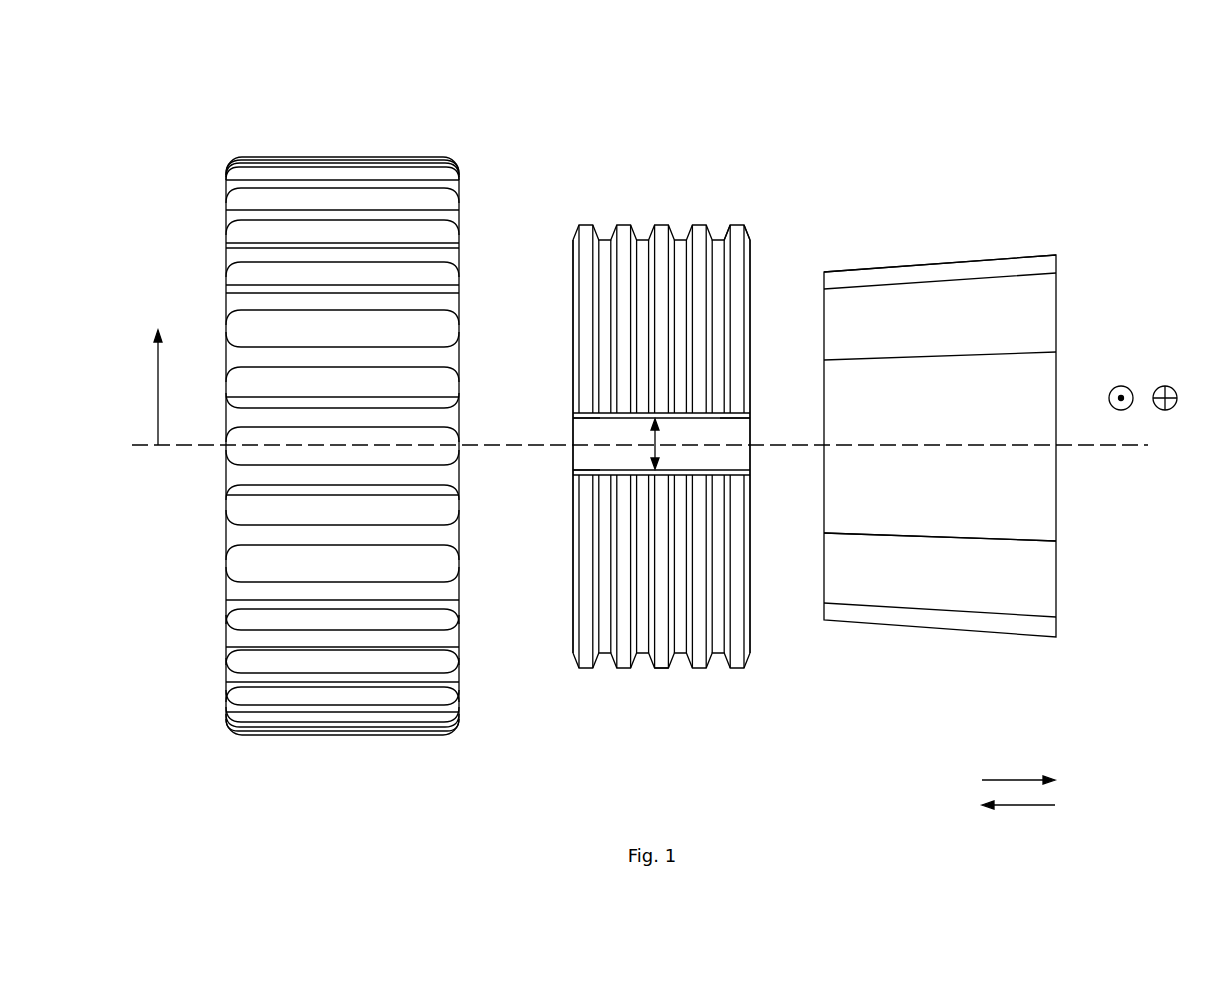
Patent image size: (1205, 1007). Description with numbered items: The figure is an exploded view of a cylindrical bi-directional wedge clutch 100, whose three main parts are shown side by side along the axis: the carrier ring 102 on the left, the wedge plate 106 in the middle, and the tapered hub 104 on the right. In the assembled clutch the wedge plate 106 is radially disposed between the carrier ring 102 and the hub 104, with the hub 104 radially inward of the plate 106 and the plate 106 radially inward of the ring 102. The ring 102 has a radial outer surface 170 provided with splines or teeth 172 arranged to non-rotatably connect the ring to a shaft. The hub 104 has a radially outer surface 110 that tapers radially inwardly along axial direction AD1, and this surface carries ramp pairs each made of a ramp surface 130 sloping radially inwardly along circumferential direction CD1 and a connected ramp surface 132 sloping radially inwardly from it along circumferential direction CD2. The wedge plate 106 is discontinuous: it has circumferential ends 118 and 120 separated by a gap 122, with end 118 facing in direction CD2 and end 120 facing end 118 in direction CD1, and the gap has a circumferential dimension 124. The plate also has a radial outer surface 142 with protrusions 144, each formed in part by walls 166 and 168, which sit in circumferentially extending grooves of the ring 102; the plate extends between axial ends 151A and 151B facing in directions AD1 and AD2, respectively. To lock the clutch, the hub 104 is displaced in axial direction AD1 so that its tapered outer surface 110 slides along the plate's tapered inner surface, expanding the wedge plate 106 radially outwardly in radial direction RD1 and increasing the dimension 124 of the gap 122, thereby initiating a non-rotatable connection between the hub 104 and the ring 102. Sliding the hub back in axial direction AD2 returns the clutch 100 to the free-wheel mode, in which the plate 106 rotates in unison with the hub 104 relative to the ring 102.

The cylindrical bi-directional wedge clutch 100 is at (994, 86).
The carrier ring 102 is at (320, 393).
The tapered hub 104 is at (975, 400).
The wedge plate 106 is at (661, 447).
The radially outer surface 110 is at (883, 252).
The circumferential end 118 is at (588, 421).
The circumferential end 120 is at (588, 468).
The gap 122 is at (737, 437).
The dimension 124 is at (658, 435).
The ramp surface 130 is at (990, 383).
The ramp surface 132 is at (995, 495).
The radial outer surface 142 is at (660, 674).
The protrusions 144 is at (662, 225).
The axial end 151A is at (573, 627).
The axial end 151B is at (750, 627).
The wall 166 is at (726, 236).
The wall 168 is at (747, 235).
The radial outer surface 170 is at (320, 145).
The splines or teeth 172 is at (229, 168).
The radial direction RD1 is at (158, 362).
The circumferential direction CD1 is at (1175, 389).
The circumferential direction CD2 is at (1109, 397).
The axial direction AD1 is at (1017, 805).
The axial direction AD2 is at (1010, 780).